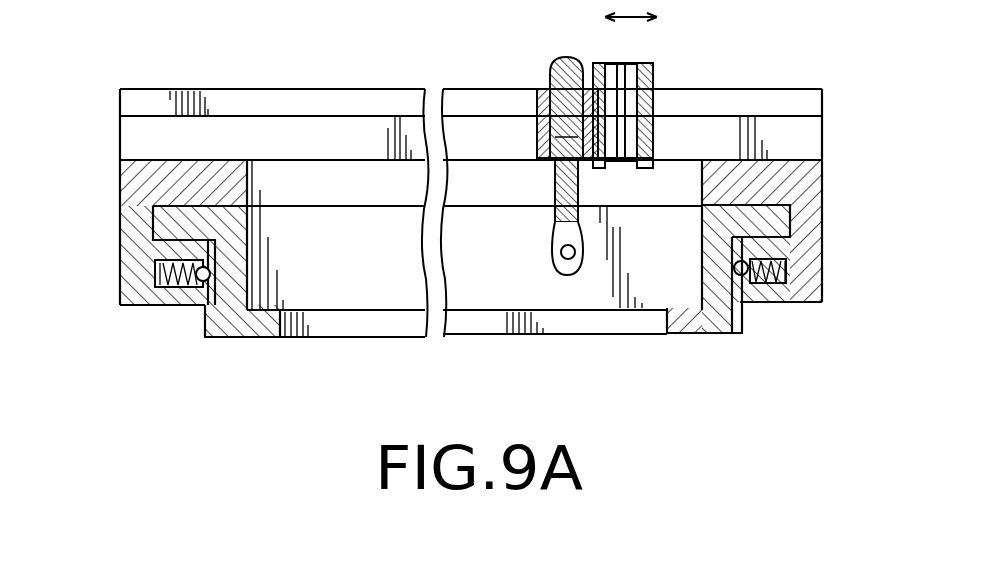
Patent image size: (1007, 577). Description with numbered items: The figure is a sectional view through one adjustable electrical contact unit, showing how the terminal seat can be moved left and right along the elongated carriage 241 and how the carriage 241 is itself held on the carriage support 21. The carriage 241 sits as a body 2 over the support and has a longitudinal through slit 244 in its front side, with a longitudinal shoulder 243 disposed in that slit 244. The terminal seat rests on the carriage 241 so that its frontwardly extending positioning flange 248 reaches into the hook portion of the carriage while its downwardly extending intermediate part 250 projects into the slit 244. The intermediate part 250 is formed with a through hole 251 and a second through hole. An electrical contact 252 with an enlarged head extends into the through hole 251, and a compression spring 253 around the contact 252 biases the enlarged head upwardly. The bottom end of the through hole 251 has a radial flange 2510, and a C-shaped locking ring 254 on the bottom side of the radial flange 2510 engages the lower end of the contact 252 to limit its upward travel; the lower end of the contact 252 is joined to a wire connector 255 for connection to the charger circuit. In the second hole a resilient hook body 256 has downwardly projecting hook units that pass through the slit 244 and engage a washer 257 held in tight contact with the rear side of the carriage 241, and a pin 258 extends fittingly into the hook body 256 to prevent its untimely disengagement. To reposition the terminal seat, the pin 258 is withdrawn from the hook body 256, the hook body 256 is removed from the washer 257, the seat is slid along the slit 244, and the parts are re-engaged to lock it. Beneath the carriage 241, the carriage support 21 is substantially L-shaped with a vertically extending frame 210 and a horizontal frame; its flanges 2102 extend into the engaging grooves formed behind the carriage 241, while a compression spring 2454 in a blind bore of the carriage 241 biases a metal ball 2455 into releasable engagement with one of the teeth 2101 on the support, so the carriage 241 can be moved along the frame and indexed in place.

The plate 2 is at (133, 146).
The carriage support 21 is at (347, 340).
The elongated carriage 241 is at (120, 183).
The longitudinal shoulder 243 is at (206, 110).
The longitudinal through slit 244 is at (265, 128).
The positioning flange 248 is at (677, 90).
The intermediate part 250 is at (657, 123).
The through hole 251 is at (657, 100).
The electrical contact 252 is at (562, 58).
The compression spring 253 is at (537, 100).
The C-shaped locking ring 254 is at (557, 165).
The wire connector 255 is at (553, 220).
The resilient hook body 256 is at (647, 68).
The washer 257 is at (657, 137).
The pin 258 is at (613, 68).
The radial flange 2510 is at (538, 157).
The compression spring 2454 is at (790, 270).
The metal ball 2455 is at (740, 298).
The flanges 2102 is at (140, 305).
The teeth 2101 is at (817, 374).
The vertically extending frame 210 is at (267, 335).